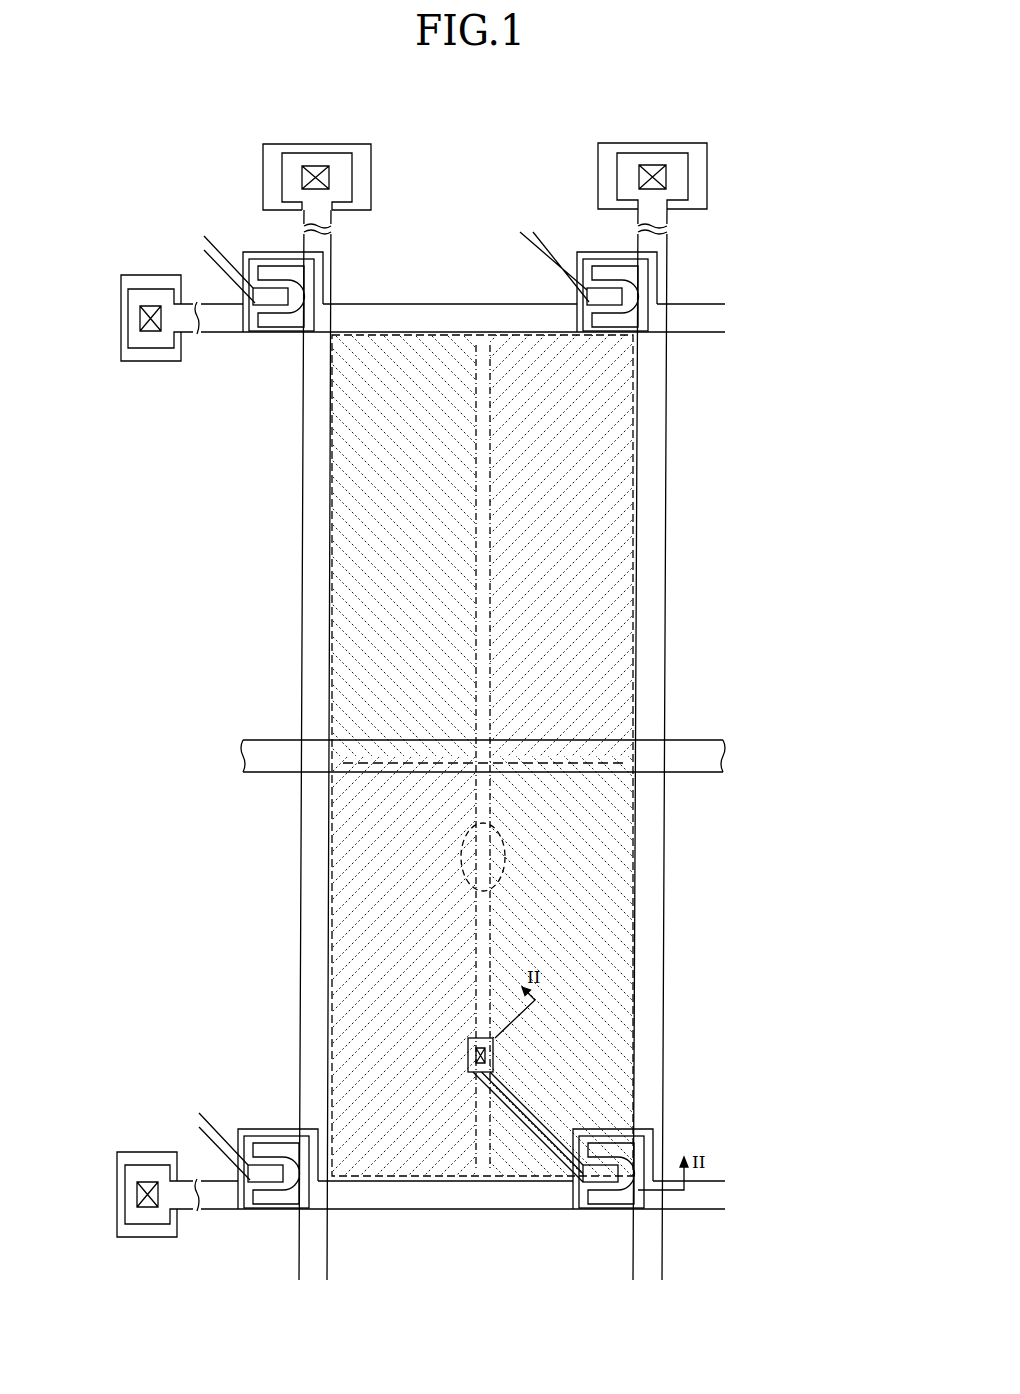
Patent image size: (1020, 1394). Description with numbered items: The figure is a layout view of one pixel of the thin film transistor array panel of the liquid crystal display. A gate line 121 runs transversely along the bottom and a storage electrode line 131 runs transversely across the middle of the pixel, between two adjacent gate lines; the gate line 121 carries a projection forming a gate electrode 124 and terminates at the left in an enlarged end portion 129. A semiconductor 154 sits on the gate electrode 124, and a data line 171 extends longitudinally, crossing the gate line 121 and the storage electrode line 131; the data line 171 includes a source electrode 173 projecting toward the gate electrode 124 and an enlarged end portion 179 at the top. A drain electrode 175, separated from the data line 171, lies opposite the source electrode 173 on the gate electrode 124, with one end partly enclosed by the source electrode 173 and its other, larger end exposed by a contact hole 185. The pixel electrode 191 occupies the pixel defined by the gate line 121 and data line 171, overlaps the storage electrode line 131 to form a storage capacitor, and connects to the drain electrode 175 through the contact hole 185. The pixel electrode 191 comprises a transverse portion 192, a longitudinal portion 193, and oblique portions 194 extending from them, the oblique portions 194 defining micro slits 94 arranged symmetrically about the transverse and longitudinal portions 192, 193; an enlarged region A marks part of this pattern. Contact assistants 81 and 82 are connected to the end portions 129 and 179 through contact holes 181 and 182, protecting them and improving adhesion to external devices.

The gate line 121 is at (442, 1210).
The gate electrode 124 is at (647, 1130).
The end portion of gate line 129 is at (118, 1213).
The storage electrode line 131 is at (707, 740).
The semiconductor 154 is at (650, 1199).
The data line 171 is at (667, 876).
The source electrode 173 is at (592, 1200).
The drain electrode 175 is at (582, 1184).
The end portion of data line 179 is at (689, 193).
The contact hole 181 is at (148, 1182).
The contact hole 182 is at (653, 165).
The contact hole 185 is at (468, 1050).
The pixel electrode 191 is at (226, 650).
The transverse portion 192 is at (378, 758).
The longitudinal portion 193 is at (480, 657).
The oblique portion 194 is at (358, 686).
The micro slit 94 is at (610, 400).
The contact assistant 81 is at (145, 1237).
The contact assistant 82 is at (707, 158).
The region A is at (490, 833).